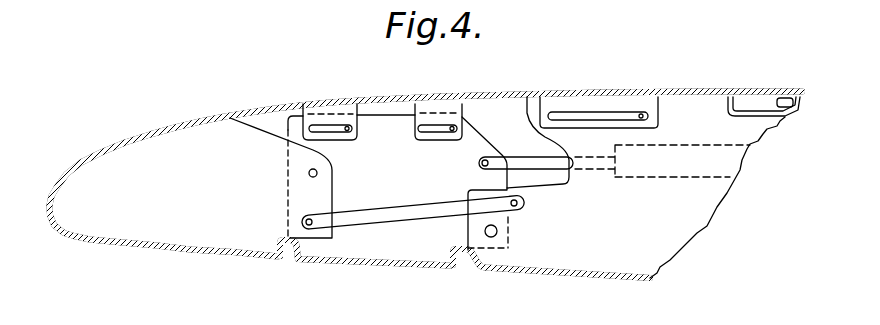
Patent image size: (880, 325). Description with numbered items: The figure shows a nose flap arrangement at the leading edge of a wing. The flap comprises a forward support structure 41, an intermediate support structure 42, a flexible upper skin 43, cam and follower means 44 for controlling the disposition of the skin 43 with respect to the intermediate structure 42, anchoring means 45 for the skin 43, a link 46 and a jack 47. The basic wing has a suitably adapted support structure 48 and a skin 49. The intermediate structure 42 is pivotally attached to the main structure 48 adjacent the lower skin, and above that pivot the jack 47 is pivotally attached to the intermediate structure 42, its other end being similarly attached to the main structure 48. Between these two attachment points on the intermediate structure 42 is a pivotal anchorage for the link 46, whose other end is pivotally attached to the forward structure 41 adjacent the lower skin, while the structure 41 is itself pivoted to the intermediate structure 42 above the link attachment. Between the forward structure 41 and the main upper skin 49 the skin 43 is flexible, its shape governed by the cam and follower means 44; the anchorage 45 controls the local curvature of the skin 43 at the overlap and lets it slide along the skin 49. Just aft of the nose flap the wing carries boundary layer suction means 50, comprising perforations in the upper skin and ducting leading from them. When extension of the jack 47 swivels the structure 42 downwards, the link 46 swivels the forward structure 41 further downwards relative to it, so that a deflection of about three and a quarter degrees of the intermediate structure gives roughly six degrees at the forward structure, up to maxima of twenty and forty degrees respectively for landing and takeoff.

The forward support structure 41 is at (200, 187).
The intermediate support structure 42 is at (412, 186).
The flexible upper skin 43 is at (513, 92).
The means for controlling the disposition of the skin 44 is at (435, 110).
The means for anchoring the skin 45 is at (612, 104).
The link 46 is at (392, 230).
The jack 47 is at (670, 150).
The support structure 48 is at (607, 242).
The skin 49 is at (588, 273).
The boundary layer suction means 50 is at (752, 98).